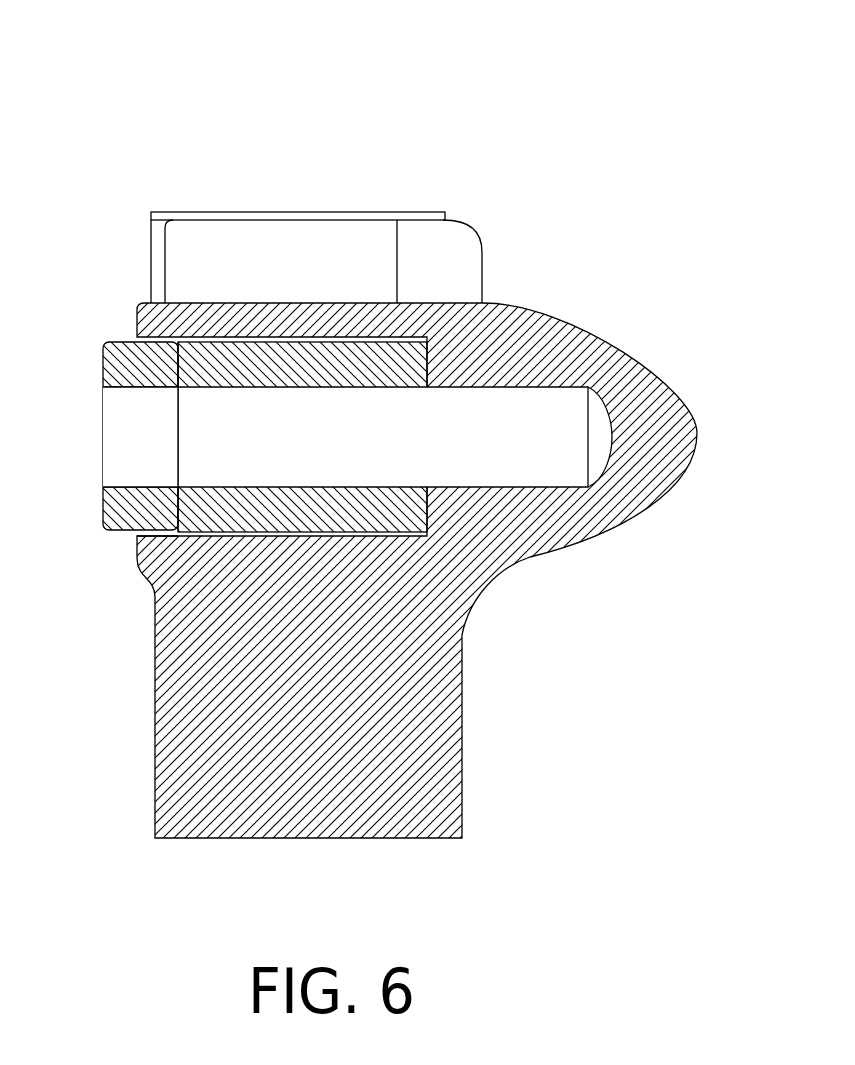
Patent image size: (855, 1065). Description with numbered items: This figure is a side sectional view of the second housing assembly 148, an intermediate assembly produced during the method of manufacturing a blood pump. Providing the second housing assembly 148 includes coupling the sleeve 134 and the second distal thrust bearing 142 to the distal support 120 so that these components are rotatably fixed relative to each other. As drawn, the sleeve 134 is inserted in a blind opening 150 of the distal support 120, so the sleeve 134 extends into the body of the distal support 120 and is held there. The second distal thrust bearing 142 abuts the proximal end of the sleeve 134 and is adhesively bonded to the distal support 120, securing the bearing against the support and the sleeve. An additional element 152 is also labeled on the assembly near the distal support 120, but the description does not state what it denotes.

The distal support 120 is at (637, 348).
The sleeve 134 is at (228, 338).
The second distal thrust bearing 142 is at (115, 340).
The second housing assembly 148 is at (118, 97).
The blind opening 150 is at (143, 533).
The nut 152 is at (472, 219).